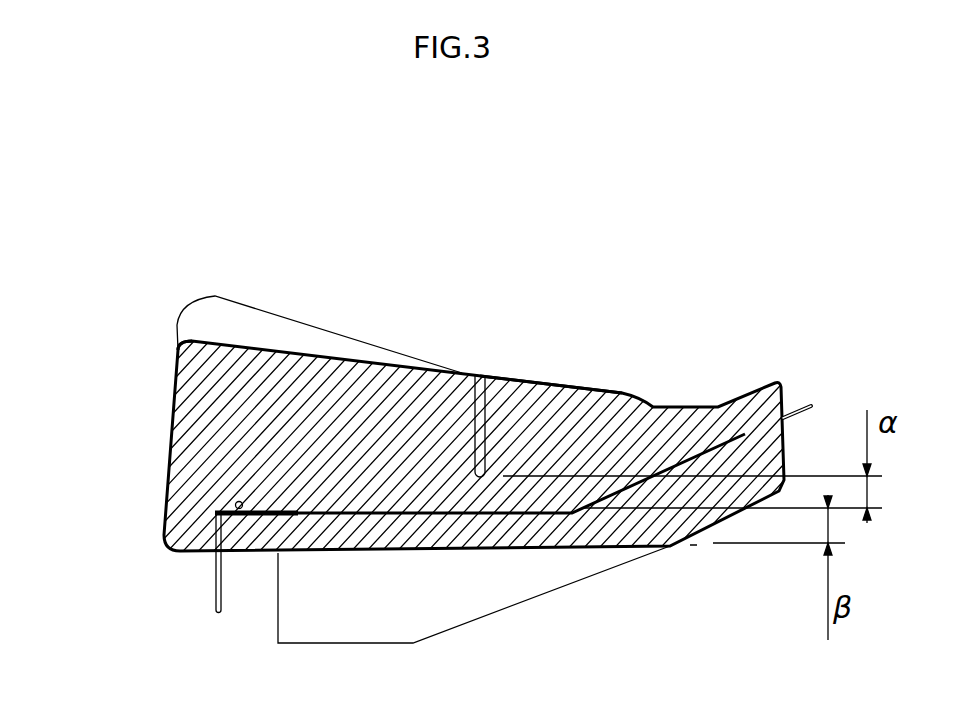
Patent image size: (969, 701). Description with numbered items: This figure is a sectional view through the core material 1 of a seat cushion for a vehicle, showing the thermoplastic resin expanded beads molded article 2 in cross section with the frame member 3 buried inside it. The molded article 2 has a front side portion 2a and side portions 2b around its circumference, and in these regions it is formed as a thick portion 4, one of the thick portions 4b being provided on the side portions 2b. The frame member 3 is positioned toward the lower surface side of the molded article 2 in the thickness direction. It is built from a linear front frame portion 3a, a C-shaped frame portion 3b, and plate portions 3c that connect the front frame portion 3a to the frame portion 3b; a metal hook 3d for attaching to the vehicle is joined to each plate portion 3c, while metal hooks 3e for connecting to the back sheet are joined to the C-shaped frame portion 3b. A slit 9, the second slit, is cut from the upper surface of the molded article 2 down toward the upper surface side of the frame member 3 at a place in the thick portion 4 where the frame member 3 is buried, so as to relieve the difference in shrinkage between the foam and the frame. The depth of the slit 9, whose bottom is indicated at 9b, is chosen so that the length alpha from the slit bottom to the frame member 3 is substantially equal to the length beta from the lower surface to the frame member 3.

The core material of a seat cushion for a vehicle 1 is at (315, 320).
The thermoplastic resin expanded beads molded article 2 is at (484, 411).
The front side portion 2a is at (126, 308).
The side portions 2b is at (551, 331).
The frame member 3 is at (444, 494).
The front frame portion 3a is at (145, 477).
The frame portion 3b is at (480, 565).
The plate portions 3c is at (178, 510).
The metal hook 3d is at (173, 586).
The metal hooks 3e is at (812, 355).
The thick portion 4 is at (319, 322).
The thick portions 4b is at (319, 322).
The slit 9 is at (504, 384).
The slot bottom 9b is at (504, 384).